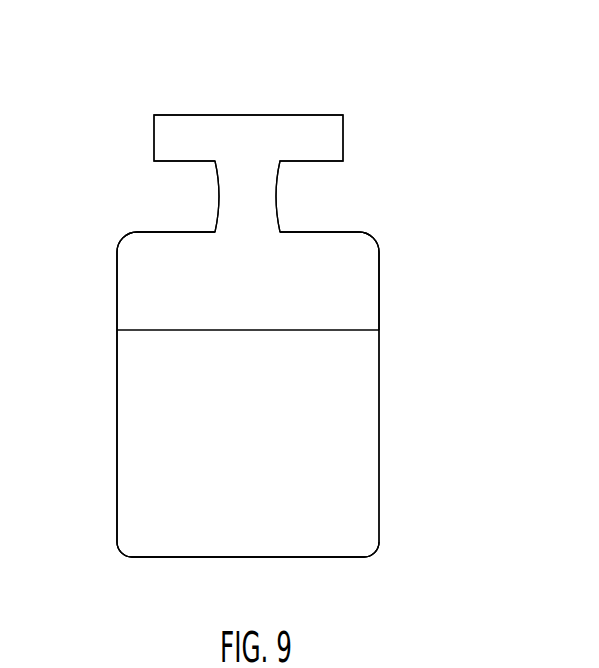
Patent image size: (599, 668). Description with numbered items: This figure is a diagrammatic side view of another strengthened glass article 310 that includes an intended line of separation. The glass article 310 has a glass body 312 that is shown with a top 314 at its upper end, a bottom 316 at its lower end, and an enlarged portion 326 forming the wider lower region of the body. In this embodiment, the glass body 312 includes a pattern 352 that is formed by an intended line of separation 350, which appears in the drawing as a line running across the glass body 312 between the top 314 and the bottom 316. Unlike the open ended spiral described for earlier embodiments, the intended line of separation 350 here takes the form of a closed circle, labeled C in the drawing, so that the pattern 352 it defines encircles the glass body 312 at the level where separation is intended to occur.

The glass article 310 is at (476, 269).
The glass body 312 is at (394, 505).
The top 314 is at (301, 106).
The bottom 316 is at (318, 576).
The enlarged portion 326 is at (111, 465).
The intended line of separation 350 is at (225, 330).
The pattern 352 is at (101, 300).